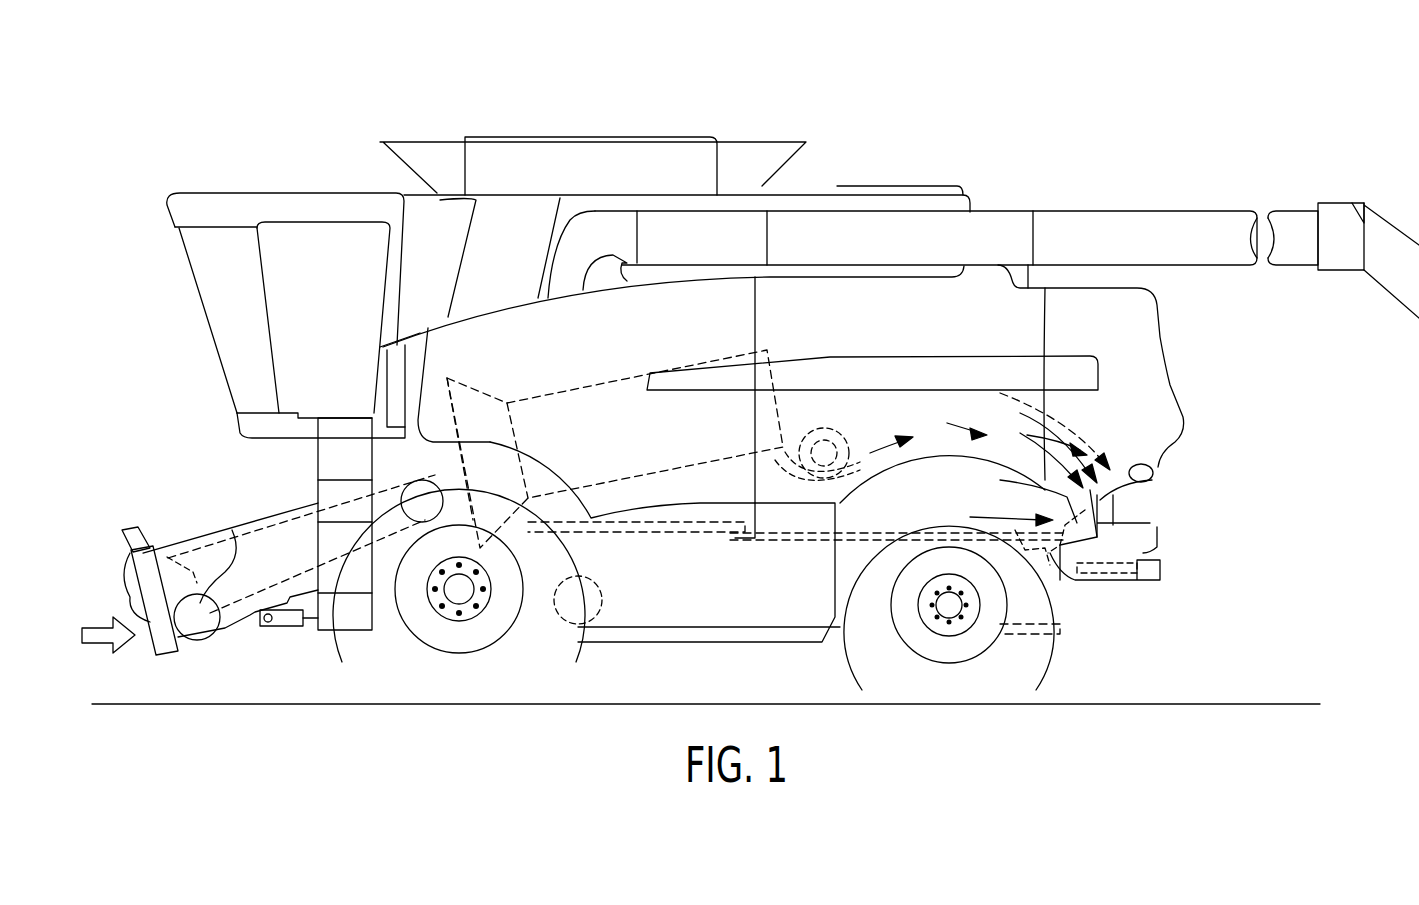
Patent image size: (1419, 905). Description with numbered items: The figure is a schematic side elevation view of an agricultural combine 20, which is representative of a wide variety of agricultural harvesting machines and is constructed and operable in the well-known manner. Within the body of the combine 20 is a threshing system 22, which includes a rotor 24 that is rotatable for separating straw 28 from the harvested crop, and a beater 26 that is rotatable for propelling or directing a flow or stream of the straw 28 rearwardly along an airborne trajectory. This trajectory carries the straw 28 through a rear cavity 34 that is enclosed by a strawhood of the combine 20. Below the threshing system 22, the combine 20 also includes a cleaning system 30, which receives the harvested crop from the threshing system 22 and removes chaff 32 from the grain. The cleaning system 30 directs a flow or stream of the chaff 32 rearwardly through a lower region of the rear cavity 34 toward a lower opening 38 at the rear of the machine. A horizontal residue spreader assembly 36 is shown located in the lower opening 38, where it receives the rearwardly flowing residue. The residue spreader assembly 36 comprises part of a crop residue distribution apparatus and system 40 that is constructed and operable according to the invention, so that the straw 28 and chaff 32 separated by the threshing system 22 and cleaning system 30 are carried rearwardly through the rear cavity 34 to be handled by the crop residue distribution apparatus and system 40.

The agricultural combine 20 is at (1110, 172).
The threshing system 22 is at (545, 375).
The rotor 24 is at (623, 377).
The beater 26 is at (822, 428).
The straw 28 is at (890, 440).
The cleaning system 30 is at (805, 545).
The chaff 32 is at (1053, 500).
The rear cavity 34 is at (1000, 420).
The horizontal residue spreader assembly 36 is at (1185, 574).
The lower opening 38 is at (1090, 490).
The crop residue distribution apparatus and system 40 is at (1182, 506).